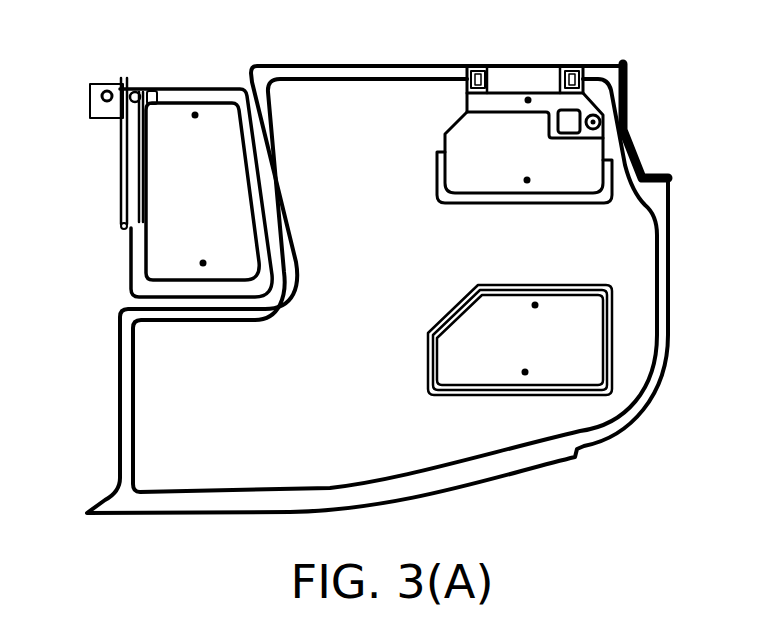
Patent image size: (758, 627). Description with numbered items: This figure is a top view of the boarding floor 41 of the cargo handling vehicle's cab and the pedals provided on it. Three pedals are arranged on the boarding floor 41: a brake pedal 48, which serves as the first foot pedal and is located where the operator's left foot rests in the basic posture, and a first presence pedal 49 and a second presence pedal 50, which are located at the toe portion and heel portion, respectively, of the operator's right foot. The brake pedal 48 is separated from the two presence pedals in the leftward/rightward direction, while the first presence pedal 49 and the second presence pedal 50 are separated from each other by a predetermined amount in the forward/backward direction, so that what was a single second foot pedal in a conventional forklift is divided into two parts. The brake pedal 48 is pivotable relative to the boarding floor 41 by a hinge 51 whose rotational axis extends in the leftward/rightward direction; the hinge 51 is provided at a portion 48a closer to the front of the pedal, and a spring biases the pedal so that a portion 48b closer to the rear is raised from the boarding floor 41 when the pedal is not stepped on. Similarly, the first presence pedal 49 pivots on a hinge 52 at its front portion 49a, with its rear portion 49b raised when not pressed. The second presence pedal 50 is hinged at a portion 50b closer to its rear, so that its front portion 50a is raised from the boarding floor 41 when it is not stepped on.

The boarding floor 41 is at (422, 457).
The brake pedal 48 is at (168, 228).
The portion closer to the front of the brake pedal 48a is at (195, 115).
The portion closer to the rear of the brake pedal 48b is at (203, 263).
The first presence pedal 49 is at (587, 165).
The portion closer to the front of the first presence pedal 49a is at (528, 100).
The portion closer to the rear of the first presence pedal 49b is at (527, 180).
The second presence pedal 50 is at (590, 345).
The portion closer to the front of the second presence pedal 50a is at (535, 305).
The portion closer to the rear of the second presence pedal 50b is at (525, 372).
The hinge 51 is at (97, 97).
The hinge 52 is at (566, 70).